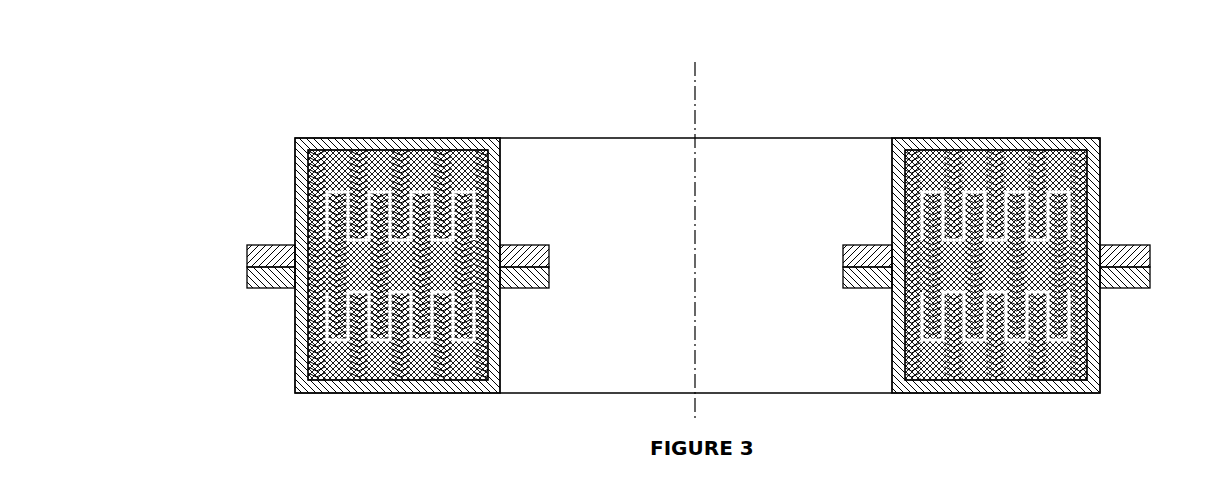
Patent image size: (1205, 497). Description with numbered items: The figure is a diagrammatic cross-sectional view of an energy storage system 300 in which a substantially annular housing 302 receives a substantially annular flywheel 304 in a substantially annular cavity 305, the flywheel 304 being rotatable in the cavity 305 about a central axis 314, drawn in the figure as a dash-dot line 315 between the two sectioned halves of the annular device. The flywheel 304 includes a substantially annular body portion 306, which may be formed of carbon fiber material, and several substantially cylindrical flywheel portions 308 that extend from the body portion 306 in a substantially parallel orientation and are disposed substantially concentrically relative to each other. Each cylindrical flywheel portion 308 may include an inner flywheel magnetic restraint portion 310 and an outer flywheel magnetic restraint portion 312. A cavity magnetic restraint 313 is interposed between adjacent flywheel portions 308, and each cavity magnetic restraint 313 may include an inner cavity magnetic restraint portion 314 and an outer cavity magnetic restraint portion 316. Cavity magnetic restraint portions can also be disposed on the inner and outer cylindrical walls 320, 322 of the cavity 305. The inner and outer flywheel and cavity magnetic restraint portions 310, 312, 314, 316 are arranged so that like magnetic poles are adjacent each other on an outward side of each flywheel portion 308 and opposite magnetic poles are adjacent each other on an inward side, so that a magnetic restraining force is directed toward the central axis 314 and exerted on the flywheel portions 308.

The energy storage system 300 is at (662, 250).
The substantially annular housing 302 is at (565, 167).
The substantially annular flywheel 304 is at (325, 307).
The substantially annular cavity 305 is at (490, 328).
The substantially annular body portion 306 is at (447, 255).
The substantially cylindrical flywheel portions 308 is at (453, 180).
The inner flywheel magnetic restraint portion 310 is at (338, 345).
The outer flywheel magnetic restraint portion 312 is at (352, 335).
The cavity magnetic restraint 313 is at (323, 151).
The central axis 314 is at (295, 157).
The axis 315 is at (698, 108).
The outer cavity magnetic restraint portion 316 is at (340, 160).
The inner cylindrical wall 320 is at (295, 383).
The outer cylindrical wall 322 is at (492, 371).